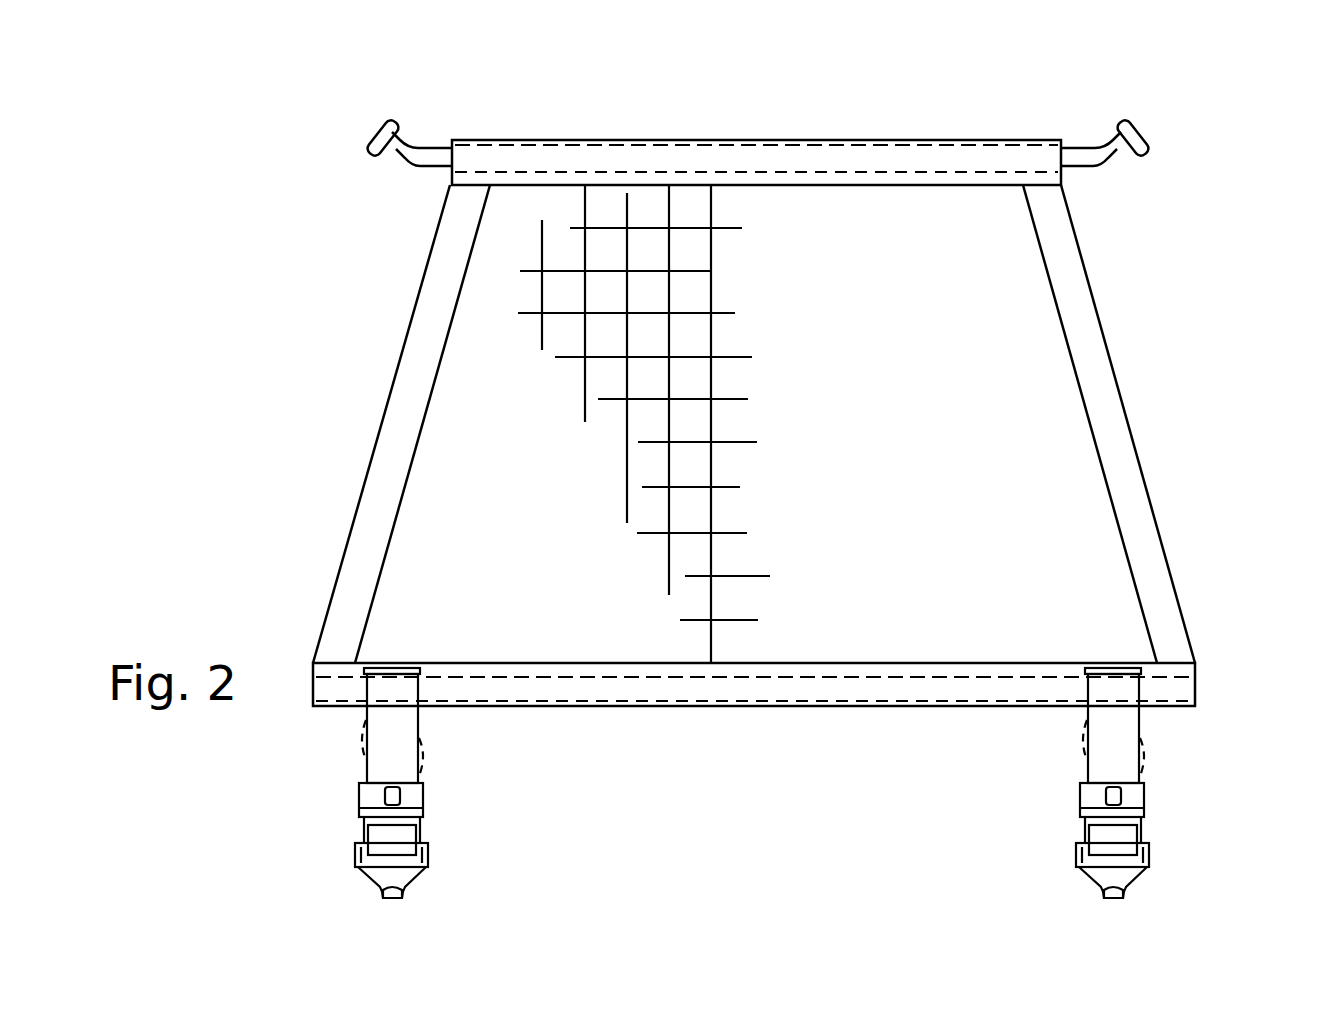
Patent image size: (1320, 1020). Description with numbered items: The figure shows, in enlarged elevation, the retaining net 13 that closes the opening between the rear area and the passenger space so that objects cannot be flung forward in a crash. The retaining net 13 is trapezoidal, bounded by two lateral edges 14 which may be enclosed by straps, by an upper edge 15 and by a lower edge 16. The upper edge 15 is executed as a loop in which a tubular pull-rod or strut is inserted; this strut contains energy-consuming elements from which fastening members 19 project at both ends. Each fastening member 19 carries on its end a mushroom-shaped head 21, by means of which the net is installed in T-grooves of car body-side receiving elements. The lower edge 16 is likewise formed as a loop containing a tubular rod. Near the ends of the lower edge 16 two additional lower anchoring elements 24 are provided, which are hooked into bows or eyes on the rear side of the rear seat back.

The retaining net 13 is at (1165, 327).
The side members 14 is at (363, 522).
The upper edge 15 is at (728, 155).
The lower edge 16 is at (897, 707).
The fastening members 19 is at (403, 163).
The mushroom-shaped heads 21 is at (375, 138).
The lower anchoring elements 24 is at (310, 790).